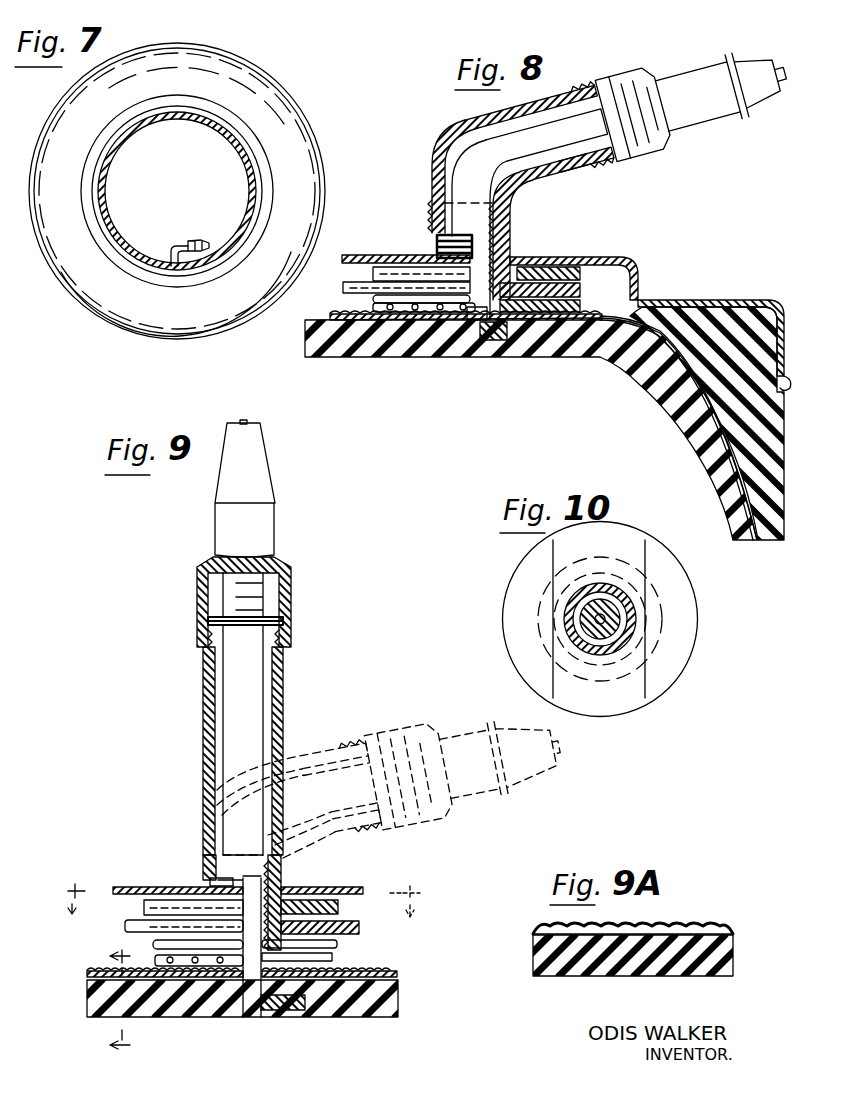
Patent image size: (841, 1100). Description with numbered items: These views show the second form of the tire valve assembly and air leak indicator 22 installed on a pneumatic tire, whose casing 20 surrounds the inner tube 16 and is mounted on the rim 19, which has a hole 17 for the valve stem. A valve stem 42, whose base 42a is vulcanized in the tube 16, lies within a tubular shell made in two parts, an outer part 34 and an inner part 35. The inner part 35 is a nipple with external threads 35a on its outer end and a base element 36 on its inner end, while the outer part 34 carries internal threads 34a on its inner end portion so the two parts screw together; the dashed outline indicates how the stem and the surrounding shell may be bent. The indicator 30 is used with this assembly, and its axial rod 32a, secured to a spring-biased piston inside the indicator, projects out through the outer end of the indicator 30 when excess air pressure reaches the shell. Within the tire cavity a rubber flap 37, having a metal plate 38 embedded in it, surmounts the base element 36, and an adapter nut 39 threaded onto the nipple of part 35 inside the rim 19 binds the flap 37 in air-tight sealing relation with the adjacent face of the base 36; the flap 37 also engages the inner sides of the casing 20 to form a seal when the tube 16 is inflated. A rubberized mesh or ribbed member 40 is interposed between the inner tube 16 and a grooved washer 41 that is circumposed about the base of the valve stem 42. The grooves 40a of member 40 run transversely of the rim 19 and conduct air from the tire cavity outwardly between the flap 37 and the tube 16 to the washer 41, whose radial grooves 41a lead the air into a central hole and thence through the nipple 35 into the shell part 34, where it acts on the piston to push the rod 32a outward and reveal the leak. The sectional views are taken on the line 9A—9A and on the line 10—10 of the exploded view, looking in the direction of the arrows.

In FIG. 9, the section line 10- 10 is at (249, 899).
In FIG. 9, the section line 9A- 9A is at (96, 998).
In FIG. 8, the inner tube 16 is at (338, 358).
In FIG. 9, the inner tube 16 is at (385, 1003).
In FIG. 9A, the inner tube 16 is at (718, 960).
In FIG. 9, the hole 17 is at (298, 889).
In FIG. 8, the rim 19 is at (693, 300).
In FIG. 9, the rim 19 is at (180, 890).
In FIG. 7, the casing 20 is at (282, 97).
In FIG. 8, the casing 20 is at (757, 312).
In FIG. 7, the valve assembly and air leak indicator 22 is at (172, 245).
In FIG. 8, the valve assembly and air leak indicator 22 is at (474, 121).
In FIG. 9, the valve assembly and air leak indicator 22 is at (295, 696).
In FIG. 7, the indicator 30 is at (205, 225).
In FIG. 8, the indicator 30 is at (712, 142).
In FIG. 9, the indicator 30 is at (288, 530).
In FIG. 8, the axial rod 32a is at (778, 72).
In FIG. 9, the axial rod 32a is at (252, 423).
In FIG. 8, the outer part 34 is at (548, 175).
In FIG. 9, the outer part 34 is at (331, 745).
In FIG. 8, the internal threads 34a is at (432, 210).
In FIG. 8, the inner part 35 is at (444, 203).
In FIG. 9, the inner part 35 is at (280, 882).
In FIG. 10, the inner part 35 is at (623, 644).
In FIG. 8, the external threads 35a is at (513, 235).
In FIG. 8, the base element 36 is at (375, 297).
In FIG. 9, the base element 36 is at (345, 944).
In FIG. 8, the rubber flap 37 is at (650, 310).
In FIG. 9, the rubber flap 37 is at (125, 926).
In FIG. 8, the metal plate 38 is at (590, 272).
In FIG. 9, the metal plate 38 is at (338, 933).
In FIG. 8, the adapter nut 39 is at (384, 272).
In FIG. 9, the adapter nut 39 is at (165, 905).
In FIG. 10, the adapter nut 39 is at (700, 630).
In FIG. 8, the rubberized mesh or ribbed member 40 is at (310, 320).
In FIG. 9, the rubberized mesh or ribbed member 40 is at (395, 978).
In FIG. 9A, the rubberized mesh or ribbed member 40 is at (725, 925).
In FIG. 8, the grooves 40a is at (605, 322).
In FIG. 9, the grooves 40a is at (396, 971).
In FIG. 9A, the grooves 40a is at (680, 920).
In FIG. 8, the grooved washer 41 is at (402, 312).
In FIG. 9, the grooved washer 41 is at (188, 965).
In FIG. 8, the radial grooves 41a is at (476, 315).
In FIG. 9, the radial grooves 41a is at (330, 958).
In FIG. 8, the valve stem 42 is at (548, 133).
In FIG. 9, the valve stem 42 is at (272, 673).
In FIG. 10, the valve stem 42 is at (597, 637).
In FIG. 8, the base of valve stem 42a is at (515, 336).
In FIG. 9, the base of valve stem 42a is at (300, 1008).